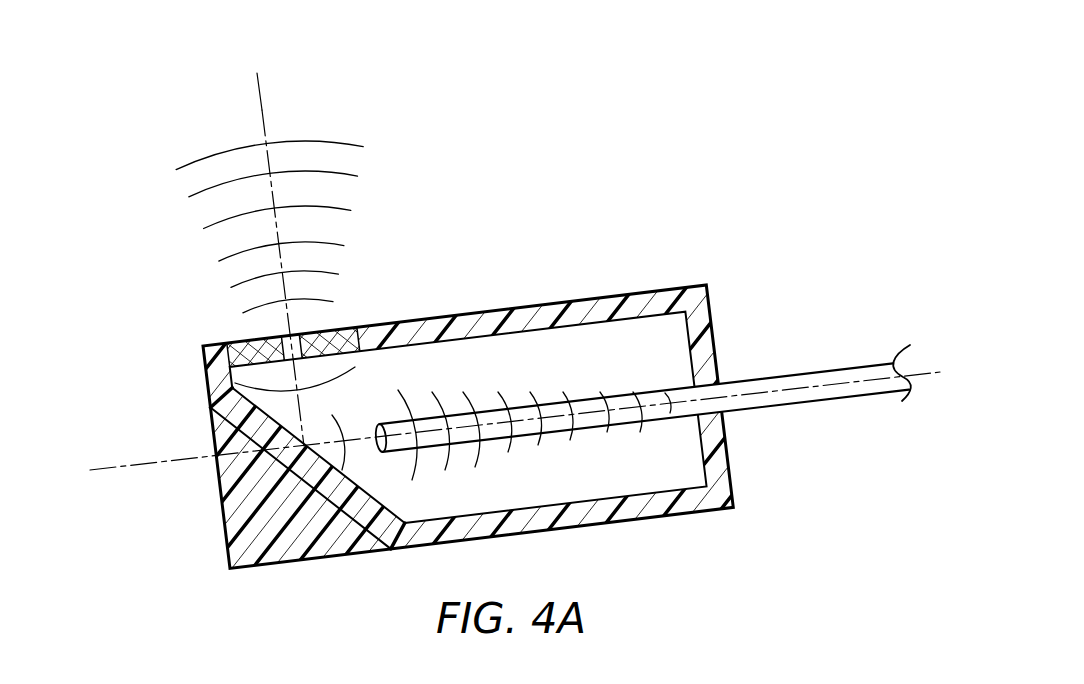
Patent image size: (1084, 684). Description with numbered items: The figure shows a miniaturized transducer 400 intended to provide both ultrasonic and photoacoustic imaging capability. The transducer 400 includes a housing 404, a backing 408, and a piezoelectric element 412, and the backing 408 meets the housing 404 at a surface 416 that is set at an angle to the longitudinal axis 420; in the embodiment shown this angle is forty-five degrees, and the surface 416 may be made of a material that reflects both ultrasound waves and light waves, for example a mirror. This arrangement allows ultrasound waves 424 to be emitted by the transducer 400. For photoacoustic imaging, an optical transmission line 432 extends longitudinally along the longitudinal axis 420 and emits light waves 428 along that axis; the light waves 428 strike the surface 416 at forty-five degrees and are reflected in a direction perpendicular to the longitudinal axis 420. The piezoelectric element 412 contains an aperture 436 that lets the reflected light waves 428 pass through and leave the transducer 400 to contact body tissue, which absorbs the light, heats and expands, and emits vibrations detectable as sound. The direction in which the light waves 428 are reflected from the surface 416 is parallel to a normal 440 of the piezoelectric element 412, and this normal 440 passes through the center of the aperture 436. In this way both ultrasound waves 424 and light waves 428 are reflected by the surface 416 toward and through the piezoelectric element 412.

The miniaturized transducer 400 is at (133, 78).
The housing 404 is at (273, 517).
The backing 408 is at (570, 355).
The piezoelectric element 412 is at (228, 342).
The surface 416 is at (318, 458).
The longitudinal axis 420 is at (856, 378).
The ultrasound waves 424 is at (350, 175).
The light waves 428 is at (265, 122).
The optical transmission line 432 is at (758, 373).
The aperture 436 is at (282, 338).
The normal 440 is at (260, 73).